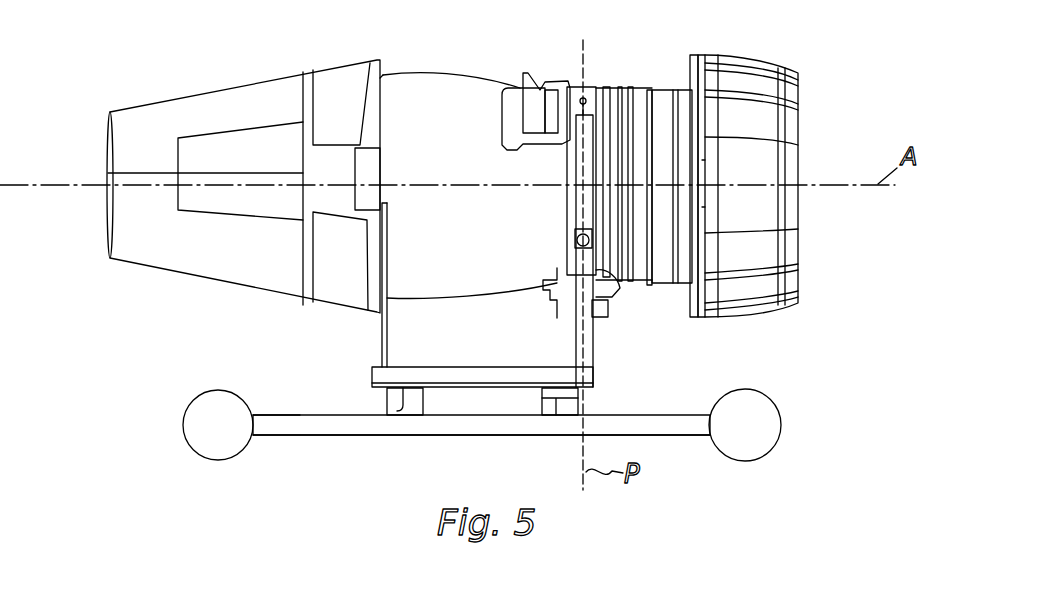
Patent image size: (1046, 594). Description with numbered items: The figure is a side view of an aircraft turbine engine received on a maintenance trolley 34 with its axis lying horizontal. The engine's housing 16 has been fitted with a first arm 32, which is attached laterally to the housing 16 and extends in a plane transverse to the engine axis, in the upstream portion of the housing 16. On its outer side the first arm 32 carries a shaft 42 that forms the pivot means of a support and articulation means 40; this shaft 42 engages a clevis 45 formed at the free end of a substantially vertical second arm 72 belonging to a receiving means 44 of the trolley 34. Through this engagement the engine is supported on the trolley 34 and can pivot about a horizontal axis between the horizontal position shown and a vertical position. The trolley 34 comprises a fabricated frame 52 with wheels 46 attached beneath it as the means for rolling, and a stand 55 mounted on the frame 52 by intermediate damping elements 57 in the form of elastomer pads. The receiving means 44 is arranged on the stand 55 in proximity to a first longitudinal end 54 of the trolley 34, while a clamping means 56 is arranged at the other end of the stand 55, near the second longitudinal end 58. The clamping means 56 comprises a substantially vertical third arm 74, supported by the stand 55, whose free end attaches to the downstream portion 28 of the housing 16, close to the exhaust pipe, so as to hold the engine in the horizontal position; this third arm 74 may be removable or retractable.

The housing 16 is at (473, 108).
The downstream portion 28 is at (405, 257).
The first arm 32 is at (580, 143).
The support and articulation means 40 is at (585, 224).
The clevis 45 is at (578, 243).
The shaft 42 is at (592, 240).
The third arm 74 is at (387, 315).
The clamping means 56 is at (380, 338).
The second arm 72 is at (583, 333).
The receiving means 44 is at (593, 359).
The stand 55 is at (493, 377).
The intermediate damping elements 57 is at (387, 407).
The frame 52 is at (440, 425).
The maintenance trolley 34 is at (377, 437).
The second longitudinal end 58 is at (273, 415).
The wheels 46 is at (218, 460).
The first longitudinal end 54 is at (683, 415).